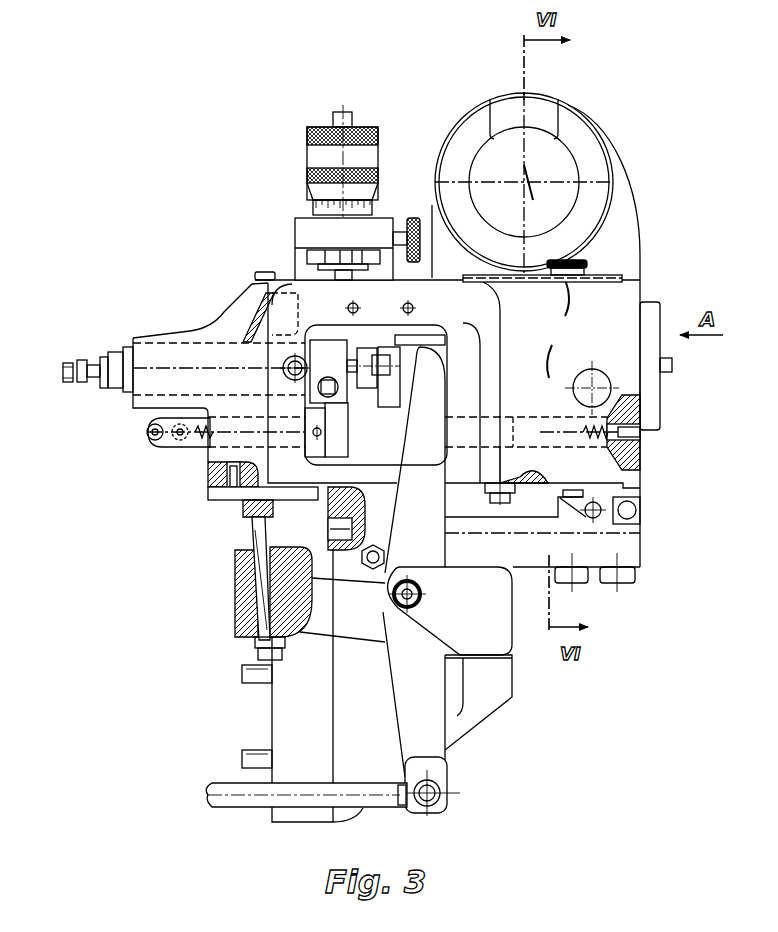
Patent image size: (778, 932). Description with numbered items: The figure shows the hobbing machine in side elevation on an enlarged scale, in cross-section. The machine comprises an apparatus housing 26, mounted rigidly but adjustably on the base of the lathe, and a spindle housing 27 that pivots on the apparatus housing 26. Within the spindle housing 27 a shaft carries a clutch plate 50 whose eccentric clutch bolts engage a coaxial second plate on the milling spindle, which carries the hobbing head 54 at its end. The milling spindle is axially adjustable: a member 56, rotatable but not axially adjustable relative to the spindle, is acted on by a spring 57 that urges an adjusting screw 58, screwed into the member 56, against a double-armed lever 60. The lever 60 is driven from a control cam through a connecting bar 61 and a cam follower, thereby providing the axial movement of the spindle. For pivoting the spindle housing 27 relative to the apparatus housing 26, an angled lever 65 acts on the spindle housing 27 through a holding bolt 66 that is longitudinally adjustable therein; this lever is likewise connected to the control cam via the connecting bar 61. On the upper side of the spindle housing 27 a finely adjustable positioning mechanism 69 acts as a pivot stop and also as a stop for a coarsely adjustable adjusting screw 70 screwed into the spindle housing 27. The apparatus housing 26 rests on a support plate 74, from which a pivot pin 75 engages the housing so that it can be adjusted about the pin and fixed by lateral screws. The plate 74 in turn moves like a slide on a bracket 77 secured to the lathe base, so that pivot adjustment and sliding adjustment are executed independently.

The apparatus housing 26 is at (622, 220).
The spindle housing 27 is at (628, 290).
The clutch plate 50 is at (433, 333).
The hobbing head 54 is at (80, 358).
The member 56 is at (322, 340).
The spring 57 is at (205, 448).
The adjusting screw 58 is at (367, 360).
The lever 60 is at (437, 737).
The connecting bar 61 is at (237, 806).
The angled lever 65 is at (360, 620).
The holding bolt 66 is at (253, 528).
The finely adjustable positioning mechanism 69 is at (320, 157).
The coarsely adjustable adjusting screw 70 is at (335, 274).
The support plate 74 is at (330, 530).
The pivot pin 75 is at (330, 515).
The bracket 77 is at (505, 695).